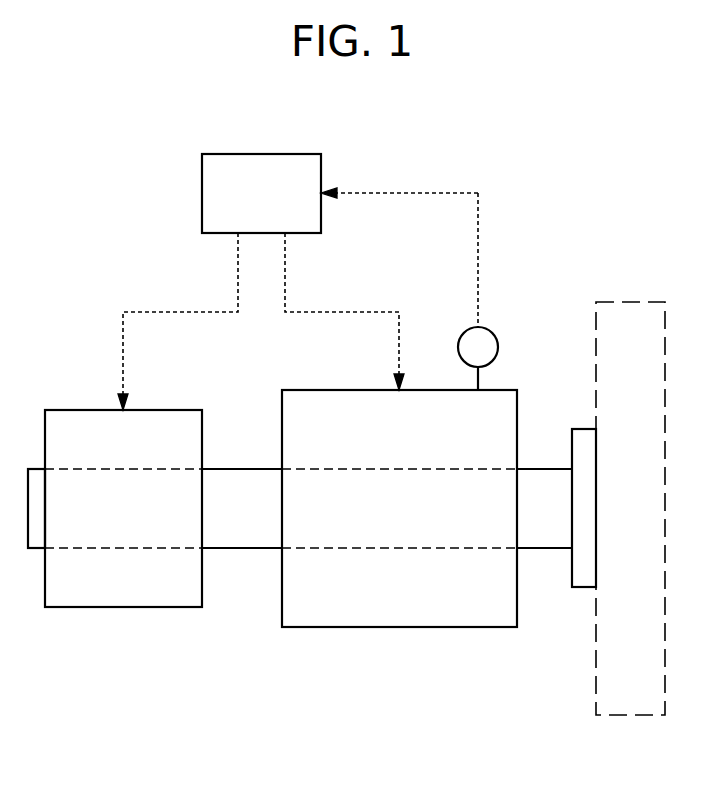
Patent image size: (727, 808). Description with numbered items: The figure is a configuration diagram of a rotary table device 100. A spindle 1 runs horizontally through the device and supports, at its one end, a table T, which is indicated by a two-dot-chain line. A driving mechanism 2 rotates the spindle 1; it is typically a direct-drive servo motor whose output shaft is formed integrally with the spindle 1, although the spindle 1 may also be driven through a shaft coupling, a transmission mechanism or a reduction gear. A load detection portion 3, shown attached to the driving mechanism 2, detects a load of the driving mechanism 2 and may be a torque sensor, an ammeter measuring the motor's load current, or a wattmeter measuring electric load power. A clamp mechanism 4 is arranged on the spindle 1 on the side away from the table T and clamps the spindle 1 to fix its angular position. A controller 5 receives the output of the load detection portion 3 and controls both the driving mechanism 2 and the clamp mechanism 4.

The rotary table device 100 is at (591, 154).
The spindle 1 is at (545, 548).
The driving mechanism 2 is at (398, 627).
The load detection portion 3 is at (486, 330).
The clamp mechanism 4 is at (118, 607).
The controller 5 is at (202, 198).
The table T is at (629, 302).